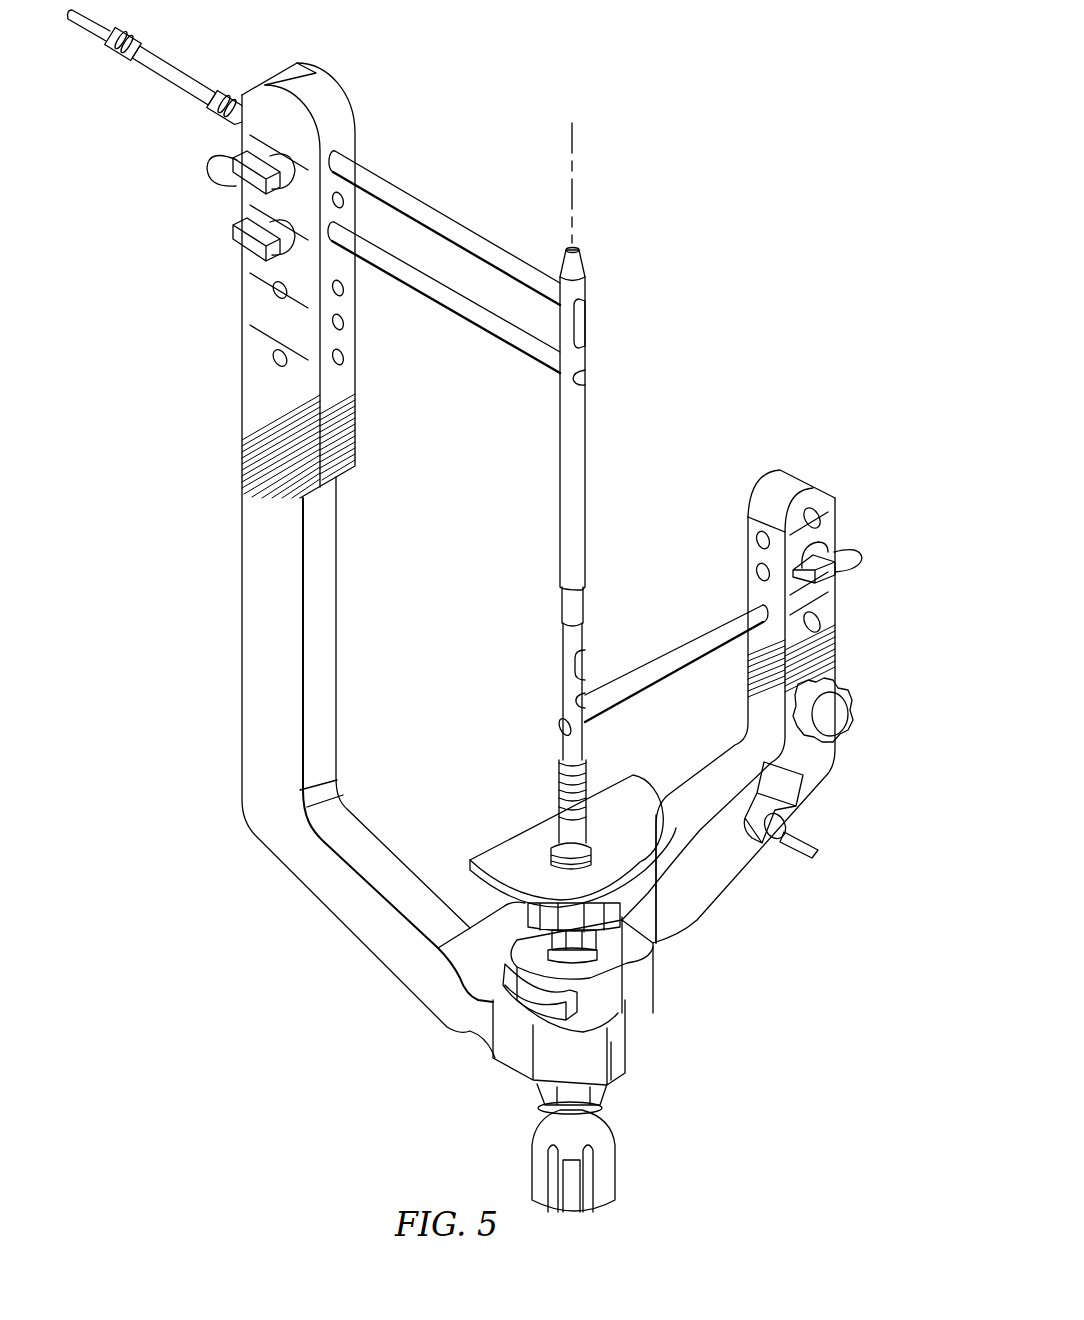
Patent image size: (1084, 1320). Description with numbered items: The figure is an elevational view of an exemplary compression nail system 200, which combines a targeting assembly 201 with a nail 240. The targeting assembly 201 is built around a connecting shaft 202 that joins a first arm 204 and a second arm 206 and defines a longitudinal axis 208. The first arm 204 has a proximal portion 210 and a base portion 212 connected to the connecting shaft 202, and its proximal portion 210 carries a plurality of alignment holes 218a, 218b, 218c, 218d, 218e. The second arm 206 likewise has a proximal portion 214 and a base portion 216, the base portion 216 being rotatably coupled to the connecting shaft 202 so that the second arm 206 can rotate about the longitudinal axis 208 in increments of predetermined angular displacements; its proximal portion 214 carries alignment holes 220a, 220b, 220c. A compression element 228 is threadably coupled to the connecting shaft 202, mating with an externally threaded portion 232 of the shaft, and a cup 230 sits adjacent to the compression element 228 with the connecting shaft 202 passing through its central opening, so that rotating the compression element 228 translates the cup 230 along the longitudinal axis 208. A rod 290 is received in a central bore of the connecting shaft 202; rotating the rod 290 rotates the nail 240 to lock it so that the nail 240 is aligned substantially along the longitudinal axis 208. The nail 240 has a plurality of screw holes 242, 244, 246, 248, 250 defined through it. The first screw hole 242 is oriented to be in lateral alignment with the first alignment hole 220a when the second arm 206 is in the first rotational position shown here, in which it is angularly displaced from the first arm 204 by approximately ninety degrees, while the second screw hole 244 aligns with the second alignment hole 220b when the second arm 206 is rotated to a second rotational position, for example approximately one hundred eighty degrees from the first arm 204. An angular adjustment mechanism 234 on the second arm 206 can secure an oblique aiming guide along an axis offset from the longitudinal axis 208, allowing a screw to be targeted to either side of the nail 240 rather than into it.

The compression nail system 200 is at (701, 67).
The targeting assembly 201 is at (497, 1079).
The connecting shaft 202 is at (592, 767).
The first arm 204 is at (253, 530).
The second arm 206 is at (828, 617).
The longitudinal axis 208 is at (573, 192).
The proximal portion 210 is at (239, 361).
The base portion 212 is at (633, 1044).
The proximal portion 214 is at (803, 479).
The base portion 216 is at (647, 1013).
The alignment hole 218a is at (345, 166).
The alignment hole 218b is at (345, 204).
The alignment hole 218c is at (344, 293).
The alignment hole 218d is at (344, 325).
The alignment hole 218e is at (344, 359).
The first alignment hole 220a is at (761, 612).
The second alignment hole 220b is at (760, 577).
The alignment hole 220c is at (760, 541).
The compression element 228 is at (660, 908).
The cup 230 is at (495, 860).
The externally threaded portion 232 is at (562, 780).
The angular adjustment mechanism 234 is at (840, 717).
The nail 240 is at (559, 505).
The first screw hole 242 is at (561, 727).
The second screw hole 244 is at (577, 699).
The screw hole 246 is at (579, 667).
The screw hole 248 is at (581, 383).
The screw hole 250 is at (580, 326).
The rod 290 is at (605, 1163).